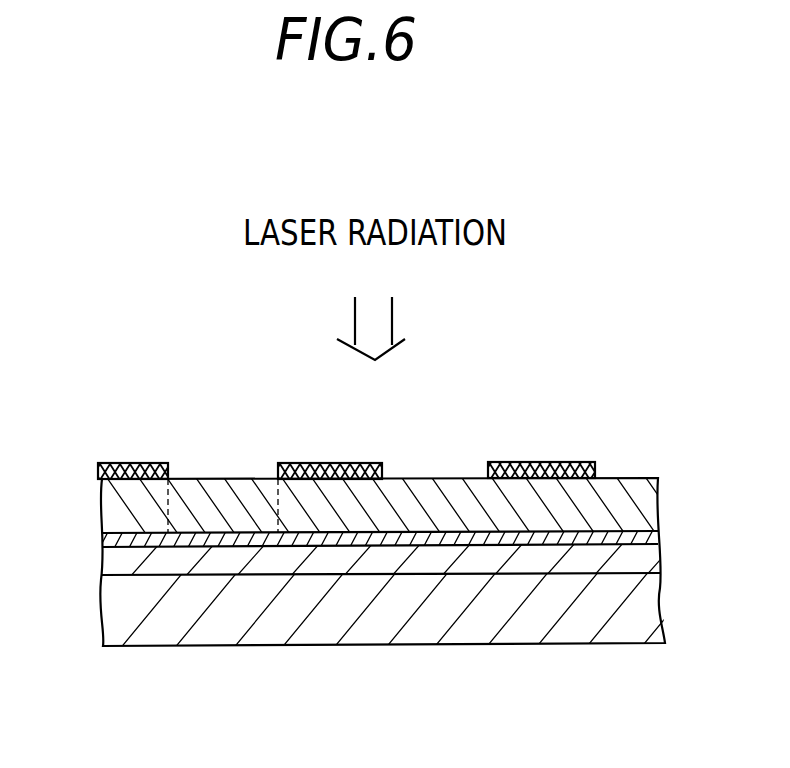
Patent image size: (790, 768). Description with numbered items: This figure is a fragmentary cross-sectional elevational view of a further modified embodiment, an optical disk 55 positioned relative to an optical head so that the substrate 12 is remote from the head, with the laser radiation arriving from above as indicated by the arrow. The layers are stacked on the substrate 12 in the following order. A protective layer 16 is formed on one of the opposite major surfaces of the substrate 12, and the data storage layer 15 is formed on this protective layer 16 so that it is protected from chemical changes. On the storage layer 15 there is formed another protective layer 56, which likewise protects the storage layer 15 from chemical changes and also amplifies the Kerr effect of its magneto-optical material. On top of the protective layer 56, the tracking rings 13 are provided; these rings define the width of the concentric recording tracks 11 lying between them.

The optical disk 55 is at (87, 438).
The recording tracks 11 is at (218, 538).
The substrate 12 is at (656, 611).
The tracking rings 13 is at (537, 462).
The data storage layer 15 is at (656, 537).
The protective layer 16 is at (652, 565).
The protective layer 56 is at (654, 506).